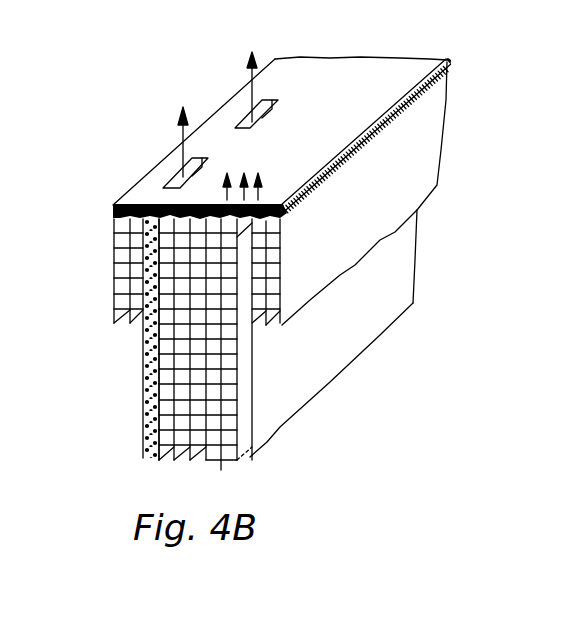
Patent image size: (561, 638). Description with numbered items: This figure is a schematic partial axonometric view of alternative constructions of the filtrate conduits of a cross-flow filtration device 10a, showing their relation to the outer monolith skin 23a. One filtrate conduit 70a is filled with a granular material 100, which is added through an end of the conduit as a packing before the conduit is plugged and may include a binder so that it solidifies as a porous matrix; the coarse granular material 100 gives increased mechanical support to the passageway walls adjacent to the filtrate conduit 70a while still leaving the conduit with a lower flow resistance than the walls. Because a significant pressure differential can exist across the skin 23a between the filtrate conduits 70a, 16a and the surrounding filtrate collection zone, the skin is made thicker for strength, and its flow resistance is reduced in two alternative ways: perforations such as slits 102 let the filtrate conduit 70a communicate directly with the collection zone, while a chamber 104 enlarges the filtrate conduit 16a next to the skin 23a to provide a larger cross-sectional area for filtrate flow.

The cross-flow filtration device 10a is at (537, 130).
The monolith skin 23a is at (347, 73).
The slits 102 is at (208, 158).
The chamber 104 is at (285, 232).
The filtrate conduit 16a is at (255, 345).
The granular material 100 is at (143, 347).
The filtrate conduit 70a is at (143, 378).